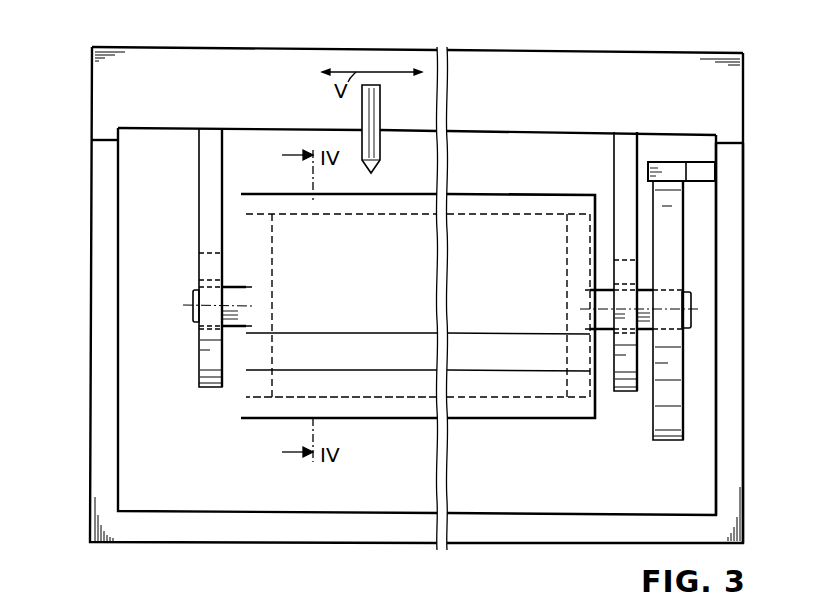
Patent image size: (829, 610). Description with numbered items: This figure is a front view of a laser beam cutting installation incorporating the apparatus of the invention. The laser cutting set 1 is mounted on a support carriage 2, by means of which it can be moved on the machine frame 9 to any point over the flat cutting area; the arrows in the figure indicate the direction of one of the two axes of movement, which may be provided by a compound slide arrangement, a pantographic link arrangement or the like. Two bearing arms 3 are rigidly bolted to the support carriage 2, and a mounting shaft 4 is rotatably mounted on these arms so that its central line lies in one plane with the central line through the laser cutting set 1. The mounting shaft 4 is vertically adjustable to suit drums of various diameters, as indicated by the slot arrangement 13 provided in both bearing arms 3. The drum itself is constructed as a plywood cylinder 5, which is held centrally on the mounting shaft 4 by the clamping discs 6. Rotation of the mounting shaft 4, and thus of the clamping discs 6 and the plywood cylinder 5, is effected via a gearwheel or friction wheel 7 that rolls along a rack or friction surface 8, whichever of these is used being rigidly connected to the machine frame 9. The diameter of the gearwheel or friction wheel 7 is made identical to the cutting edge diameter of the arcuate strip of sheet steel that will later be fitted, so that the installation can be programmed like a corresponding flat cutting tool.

The laser cutting set 1 is at (378, 118).
The support carriage 2 is at (667, 68).
The bearing arms 3 is at (208, 155).
The mounting shaft 4 is at (210, 303).
The plywood cylinder 5 is at (545, 405).
The clamping discs 6 is at (253, 352).
The gearwheel or friction wheel 7 is at (667, 367).
The rack or friction surface 8 is at (670, 171).
The machine frame 9 is at (727, 250).
The slot arrangement 13 is at (215, 253).